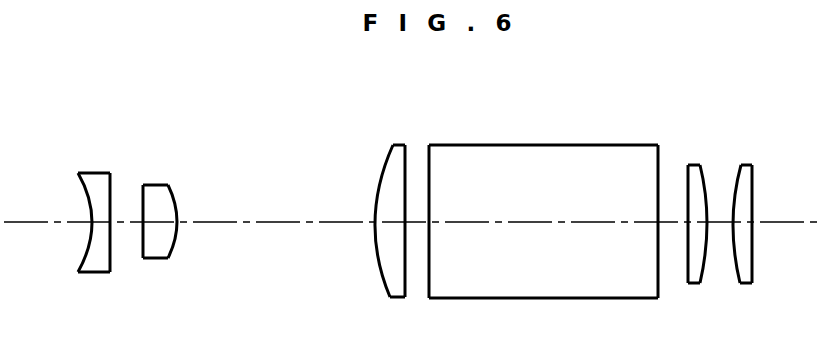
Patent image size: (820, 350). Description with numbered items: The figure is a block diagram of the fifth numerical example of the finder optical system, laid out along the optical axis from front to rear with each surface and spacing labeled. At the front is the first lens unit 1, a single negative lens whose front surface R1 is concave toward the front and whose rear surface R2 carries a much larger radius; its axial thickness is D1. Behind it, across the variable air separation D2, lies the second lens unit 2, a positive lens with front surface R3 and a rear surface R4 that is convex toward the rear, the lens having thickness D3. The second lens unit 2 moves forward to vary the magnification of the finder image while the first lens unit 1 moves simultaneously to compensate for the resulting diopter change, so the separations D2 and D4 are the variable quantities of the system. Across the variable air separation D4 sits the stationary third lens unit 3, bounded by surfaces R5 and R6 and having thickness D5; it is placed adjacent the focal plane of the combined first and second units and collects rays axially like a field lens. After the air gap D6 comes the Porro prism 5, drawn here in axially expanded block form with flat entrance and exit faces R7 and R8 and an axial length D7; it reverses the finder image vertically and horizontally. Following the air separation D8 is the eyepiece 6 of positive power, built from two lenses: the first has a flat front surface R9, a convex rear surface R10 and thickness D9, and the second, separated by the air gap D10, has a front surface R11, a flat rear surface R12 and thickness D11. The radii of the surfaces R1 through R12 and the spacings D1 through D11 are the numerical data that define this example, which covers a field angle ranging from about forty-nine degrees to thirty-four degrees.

The first lens unit 1 is at (100, 97).
The second lens unit 2 is at (173, 97).
The third lens unit 3 is at (345, 97).
The Porro prism 5 is at (432, 97).
The eyepiece 6 is at (803, 97).
The radius of curvature of first surface R1 is at (80, 178).
The radius of curvature of second surface R2 is at (111, 173).
The radius of curvature of third surface R3 is at (143, 192).
The radius of curvature of fourth surface R4 is at (173, 195).
The radius of curvature of fifth surface R5 is at (380, 178).
The radius of curvature of sixth surface R6 is at (407, 172).
The radius of curvature of seventh surface R7 is at (430, 168).
The radius of curvature of eighth surface R8 is at (660, 172).
The radius of curvature of ninth surface R9 is at (686, 178).
The radius of curvature of tenth surface R10 is at (706, 182).
The radius of curvature of eleventh surface R11 is at (734, 184).
The radius of curvature of twelfth surface R12 is at (754, 181).
The axial thickness of first lens D1 is at (100, 222).
The variable air separation between first and second lens units D2 is at (124, 222).
The axial thickness of second lens D3 is at (160, 222).
The variable air separation between second and third lens units D4 is at (258, 222).
The axial thickness of third lens D5 is at (392, 222).
The air separation between third lens unit and prism D6 is at (418, 222).
The axial thickness of prism block D7 is at (540, 222).
The air separation between prism and eyepiece D8 is at (670, 222).
The axial thickness of first eyepiece lens D9 is at (695, 222).
The air separation within eyepiece D10 is at (722, 222).
The axial thickness of second eyepiece lens D11 is at (745, 222).